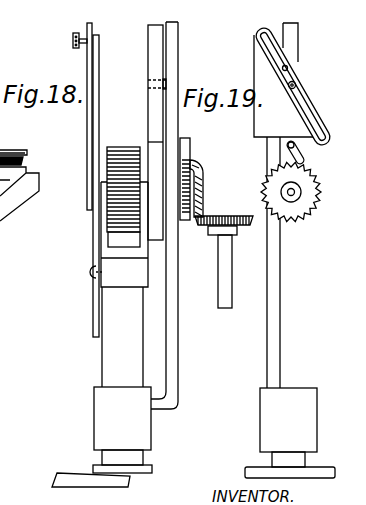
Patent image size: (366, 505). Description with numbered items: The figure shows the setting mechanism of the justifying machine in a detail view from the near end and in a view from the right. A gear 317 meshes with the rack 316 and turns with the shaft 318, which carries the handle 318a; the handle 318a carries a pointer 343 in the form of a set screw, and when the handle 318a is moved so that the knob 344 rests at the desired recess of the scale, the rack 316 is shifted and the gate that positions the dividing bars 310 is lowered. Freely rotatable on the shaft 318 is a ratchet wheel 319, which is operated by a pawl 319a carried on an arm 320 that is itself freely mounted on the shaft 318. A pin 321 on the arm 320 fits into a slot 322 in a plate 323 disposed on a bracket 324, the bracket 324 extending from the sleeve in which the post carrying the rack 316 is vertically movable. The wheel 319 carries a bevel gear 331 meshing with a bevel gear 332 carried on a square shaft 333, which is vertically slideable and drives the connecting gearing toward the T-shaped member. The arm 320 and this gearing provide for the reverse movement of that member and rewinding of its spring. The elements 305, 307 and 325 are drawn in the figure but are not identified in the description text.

In FIG. 18, the shelf pad 305 is at (26, 158).
In FIG. 18, the top plate 307 is at (10, 149).
In FIG. 18, the dividing bars 310 is at (25, 196).
In FIG. 18, the rack 316 is at (118, 241).
In FIG. 18, the gear 317 is at (115, 211).
In FIG. 18, the shaft 318 is at (87, 193).
In FIG. 18, the handle 318a is at (95, 36).
In FIG. 19, the ratchet wheel 319 is at (308, 212).
In FIG. 19, the pawl 319a is at (300, 160).
In FIG. 18, the arm 320 is at (148, 52).
In FIG. 19, the arm 320 is at (297, 31).
In FIG. 19, the pin 321 is at (296, 85).
In FIG. 19, the slot 322 is at (288, 68).
In FIG. 18, the plate 323 is at (178, 42).
In FIG. 19, the plate 323 is at (282, 47).
In FIG. 18, the bracket 324 is at (172, 357).
In FIG. 19, the bracket 324 is at (276, 311).
In FIG. 18, the base 325 is at (147, 434).
In FIG. 19, the base 325 is at (307, 392).
In FIG. 19, the bevel gear 331 is at (203, 181).
In FIG. 19, the bevel gear 332 is at (228, 216).
In FIG. 19, the square shaft 333 is at (231, 284).
In FIG. 18, the pointer 343 is at (84, 47).
In FIG. 18, the knob 344 is at (73, 42).